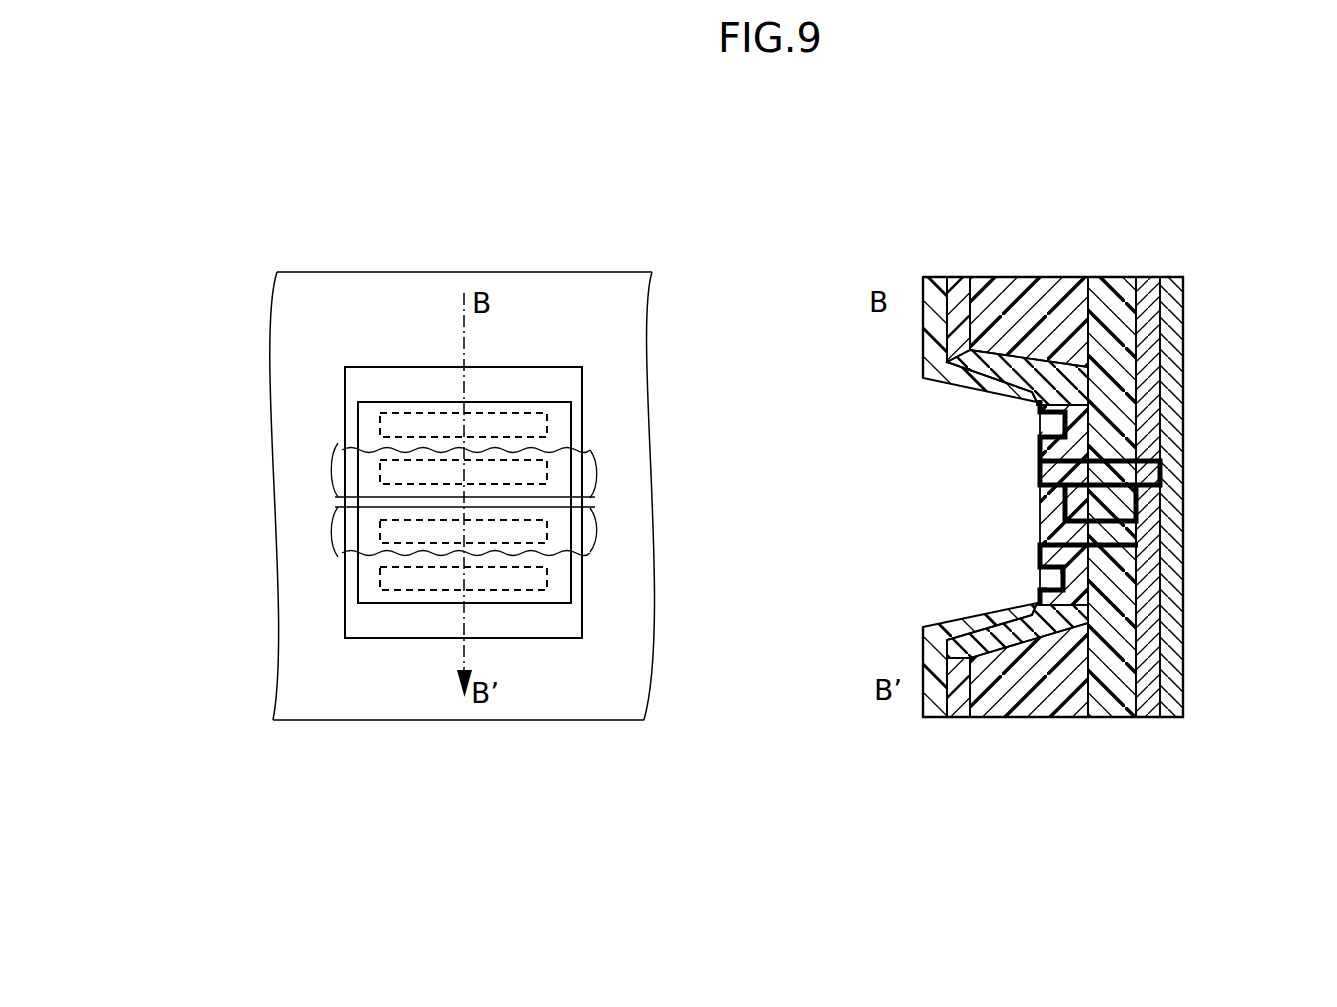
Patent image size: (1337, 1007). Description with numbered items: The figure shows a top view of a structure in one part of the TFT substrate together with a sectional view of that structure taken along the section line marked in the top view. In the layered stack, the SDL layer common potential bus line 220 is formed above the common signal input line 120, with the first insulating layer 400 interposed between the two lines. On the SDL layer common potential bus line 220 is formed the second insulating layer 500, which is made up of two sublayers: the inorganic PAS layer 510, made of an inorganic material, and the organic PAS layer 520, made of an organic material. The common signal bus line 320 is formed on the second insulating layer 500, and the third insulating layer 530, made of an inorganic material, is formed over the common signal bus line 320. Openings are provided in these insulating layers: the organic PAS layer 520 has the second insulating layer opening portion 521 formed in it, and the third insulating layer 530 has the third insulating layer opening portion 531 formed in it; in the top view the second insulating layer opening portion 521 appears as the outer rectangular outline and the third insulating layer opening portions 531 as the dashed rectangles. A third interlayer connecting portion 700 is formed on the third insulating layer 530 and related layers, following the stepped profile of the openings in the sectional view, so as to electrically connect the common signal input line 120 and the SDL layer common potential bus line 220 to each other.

The common signal input line 120 is at (595, 478).
The SDL layer common potential bus line 220 is at (595, 537).
The common signal bus line 320 is at (958, 712).
The first insulating layer 400 is at (1172, 712).
The second insulating layer 500 is at (1053, 572).
The inorganic PAS layer 510 is at (1113, 712).
The organic PAS layer 520 is at (1034, 712).
The second insulating layer opening portion 521 is at (583, 375).
The third insulating layer 530 is at (933, 713).
The third insulating layer opening portion 531 is at (380, 423).
The third interlayer connecting portion 700 is at (572, 425).